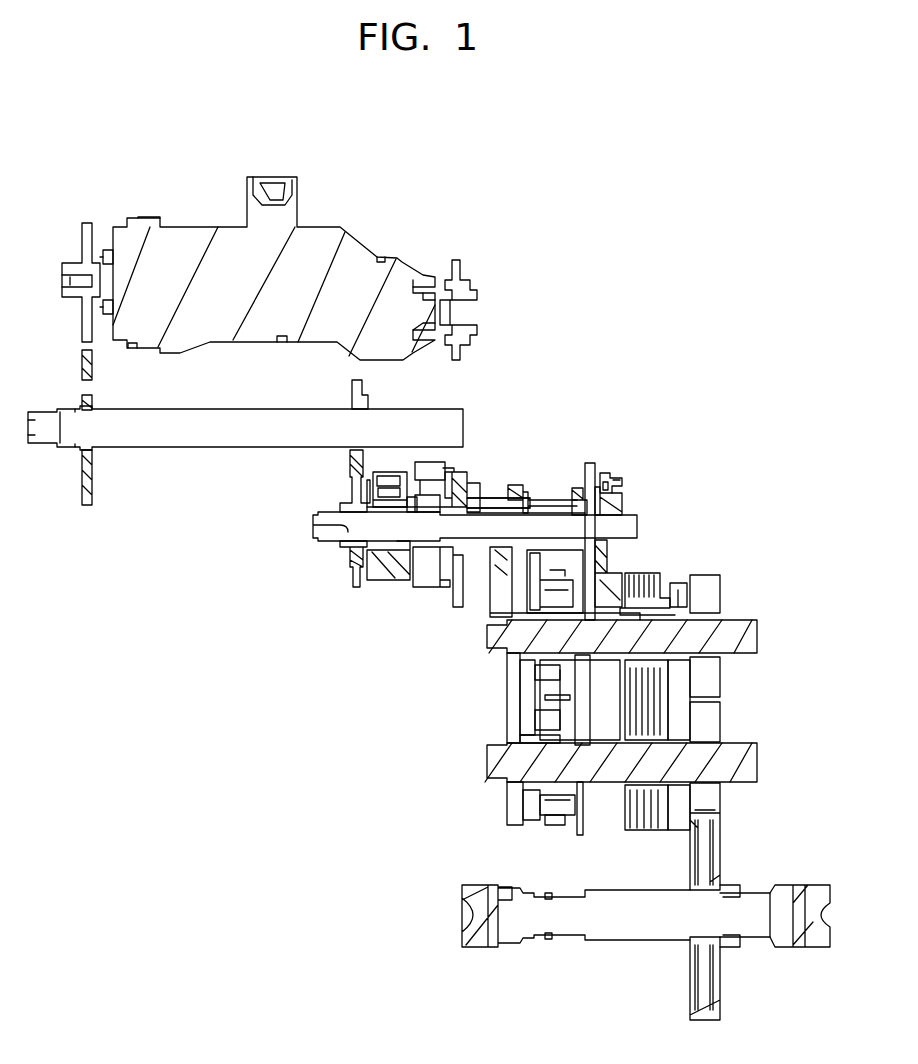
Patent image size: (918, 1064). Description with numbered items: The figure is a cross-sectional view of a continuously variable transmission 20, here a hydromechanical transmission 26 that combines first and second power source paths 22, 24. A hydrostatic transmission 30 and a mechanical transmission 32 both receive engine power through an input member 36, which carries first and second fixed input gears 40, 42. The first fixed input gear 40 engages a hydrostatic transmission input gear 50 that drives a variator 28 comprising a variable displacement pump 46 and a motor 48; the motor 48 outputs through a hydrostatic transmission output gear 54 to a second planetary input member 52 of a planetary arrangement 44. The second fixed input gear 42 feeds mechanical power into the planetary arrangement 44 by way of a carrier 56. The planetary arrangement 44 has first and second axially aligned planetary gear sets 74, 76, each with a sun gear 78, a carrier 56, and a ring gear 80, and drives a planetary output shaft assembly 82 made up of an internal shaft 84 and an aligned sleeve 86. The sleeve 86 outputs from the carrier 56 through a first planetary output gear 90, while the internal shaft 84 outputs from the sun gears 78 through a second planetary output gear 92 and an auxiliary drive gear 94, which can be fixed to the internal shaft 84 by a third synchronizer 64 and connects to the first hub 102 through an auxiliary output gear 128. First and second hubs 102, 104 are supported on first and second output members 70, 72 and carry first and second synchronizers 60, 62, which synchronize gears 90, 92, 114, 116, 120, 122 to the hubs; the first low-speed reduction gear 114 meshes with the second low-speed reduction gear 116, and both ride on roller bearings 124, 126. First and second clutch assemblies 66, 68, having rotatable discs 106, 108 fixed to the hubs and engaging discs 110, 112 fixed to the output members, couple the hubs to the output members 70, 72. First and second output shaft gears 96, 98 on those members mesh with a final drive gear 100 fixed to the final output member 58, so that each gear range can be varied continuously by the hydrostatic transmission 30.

The continuously variable transmission 20 is at (528, 213).
The first power source path 22 is at (341, 200).
The second power source path 24 is at (155, 470).
The hydromechanical transmission 26 is at (70, 355).
The variator 28 is at (373, 186).
The hydrostatic transmission 30 is at (437, 240).
The mechanical transmission 32 is at (797, 752).
The input member 36 is at (50, 445).
The first fixed input gear 40 is at (83, 490).
The second fixed input gear 42 is at (360, 395).
The planetary arrangement 44 is at (368, 668).
The variable displacement pump 46 is at (178, 227).
The motor 48 is at (385, 262).
The hydrostatic transmission input gear 50 is at (82, 228).
The second planetary input member 52 is at (445, 497).
The hydrostatic transmission output gear 54 is at (462, 278).
The carrier 56 is at (447, 498).
The final output member 58 is at (830, 947).
The first synchronizer 60 is at (555, 578).
The second synchronizer 62 is at (537, 820).
The third synchronizer 64 is at (622, 483).
The first clutch assembly 66 is at (689, 556).
The second clutch assembly 68 is at (623, 815).
The first output member 70 is at (497, 640).
The second output member 72 is at (495, 748).
The first axially aligned planetary gear set 74 is at (362, 595).
The second axially aligned planetary gear set 76 is at (408, 595).
The sun gear 78 is at (313, 528).
The ring gear 80 is at (447, 590).
The planetary output shaft assembly 82 is at (587, 437).
The internal shaft 84 is at (630, 520).
The aligned sleeve 86 is at (480, 498).
The first planetary output gear 90 is at (526, 493).
The second planetary output gear 92 is at (572, 485).
The auxiliary drive gear 94 is at (610, 465).
The first output shaft gear 96 is at (722, 590).
The second output shaft gear 98 is at (722, 710).
The final drive gear 100 is at (722, 845).
The first hub 102 is at (581, 700).
The second hub 104 is at (599, 808).
The first set of rotatable discs 106 is at (633, 571).
The second set of rotatable discs 108 is at (640, 830).
The first set of engaging discs 110 is at (660, 563).
The second set of engaging discs 112 is at (660, 830).
The first low-speed reduction gear 114 is at (510, 680).
The second low-speed reduction gear 116 is at (510, 820).
The gear 120 is at (568, 690).
The gear 122 is at (570, 830).
The roller bearing 124 is at (495, 650).
The roller bearing 126 is at (500, 770).
The auxiliary output gear 128 is at (597, 588).